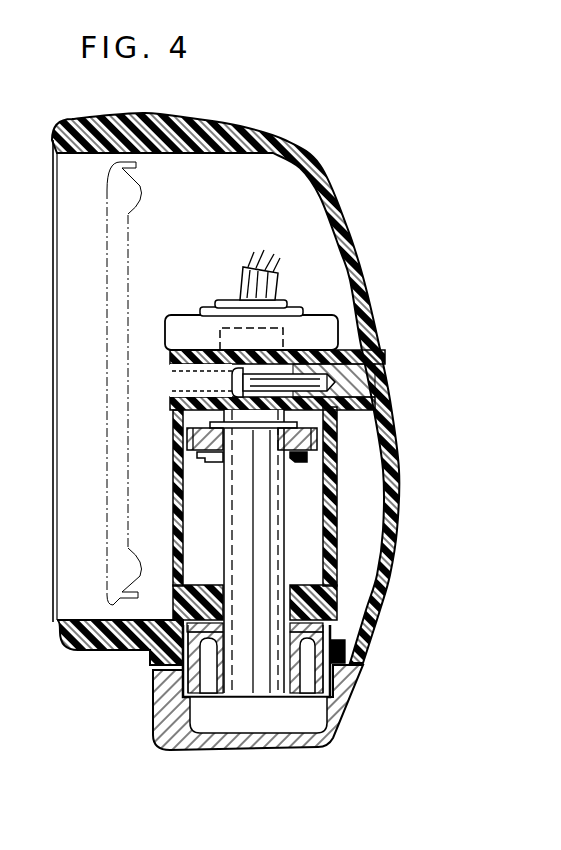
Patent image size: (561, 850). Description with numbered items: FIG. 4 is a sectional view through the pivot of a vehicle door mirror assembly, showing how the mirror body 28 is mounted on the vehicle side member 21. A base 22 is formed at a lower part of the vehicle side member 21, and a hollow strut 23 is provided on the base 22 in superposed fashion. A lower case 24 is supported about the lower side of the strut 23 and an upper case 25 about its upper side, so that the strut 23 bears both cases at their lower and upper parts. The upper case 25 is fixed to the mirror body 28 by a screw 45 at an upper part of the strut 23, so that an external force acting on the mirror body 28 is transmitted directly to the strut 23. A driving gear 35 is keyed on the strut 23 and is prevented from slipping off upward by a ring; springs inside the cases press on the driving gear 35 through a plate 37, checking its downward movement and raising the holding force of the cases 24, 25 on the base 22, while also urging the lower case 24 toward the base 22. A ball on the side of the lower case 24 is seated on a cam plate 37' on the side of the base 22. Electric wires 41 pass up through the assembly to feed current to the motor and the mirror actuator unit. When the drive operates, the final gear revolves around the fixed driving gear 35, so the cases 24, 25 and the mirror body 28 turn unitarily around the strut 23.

The vehicle side member 21 is at (170, 745).
The base 22 is at (327, 683).
The strut 23 is at (276, 524).
The lower case 24 is at (333, 607).
The upper case 25 is at (340, 473).
The mirror body 28 is at (360, 232).
The driving gear 35 is at (189, 438).
The plate 37 is at (249, 487).
The cam plate 37' is at (249, 661).
The electric wires 41 is at (242, 282).
The screw 45 is at (232, 376).